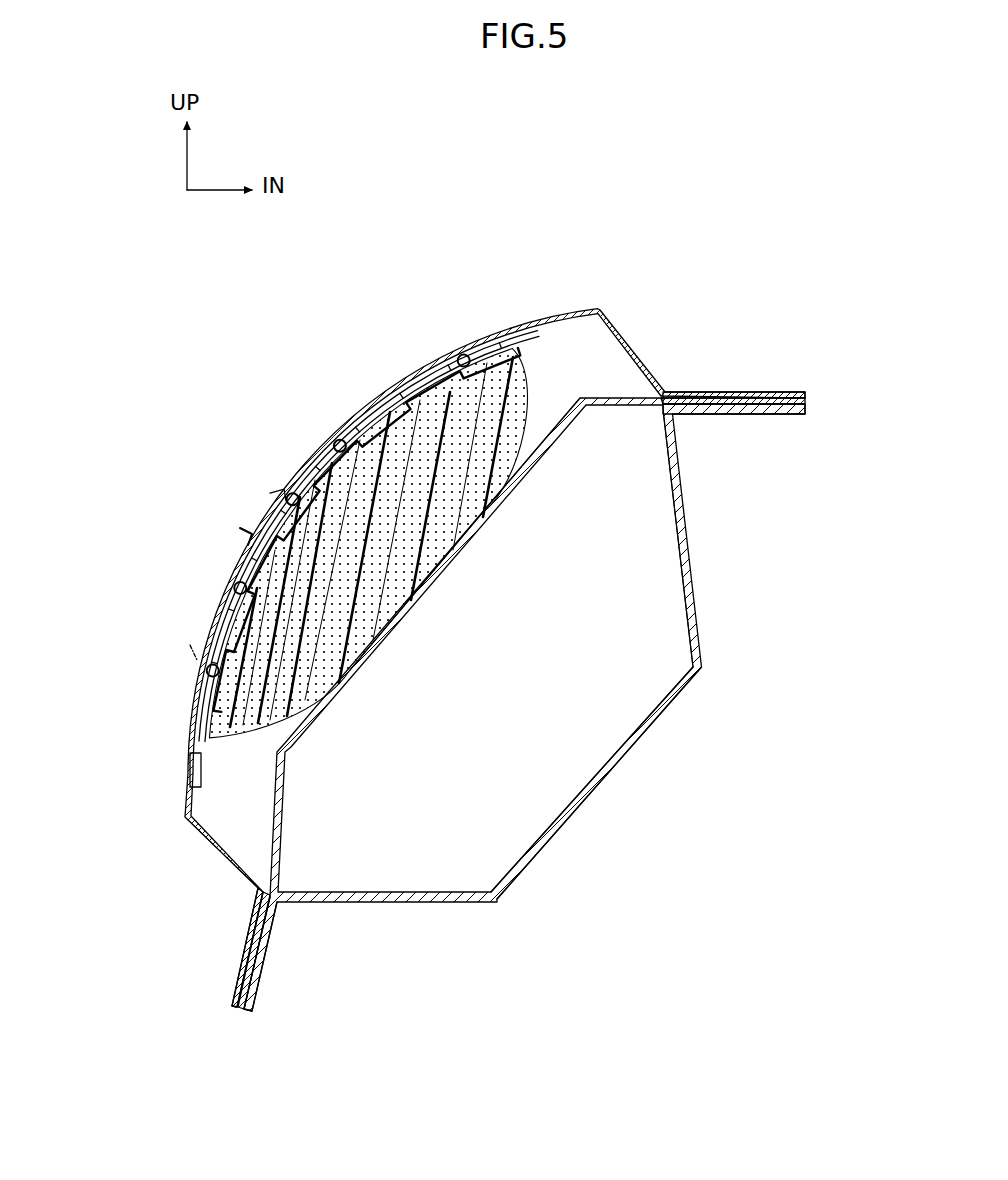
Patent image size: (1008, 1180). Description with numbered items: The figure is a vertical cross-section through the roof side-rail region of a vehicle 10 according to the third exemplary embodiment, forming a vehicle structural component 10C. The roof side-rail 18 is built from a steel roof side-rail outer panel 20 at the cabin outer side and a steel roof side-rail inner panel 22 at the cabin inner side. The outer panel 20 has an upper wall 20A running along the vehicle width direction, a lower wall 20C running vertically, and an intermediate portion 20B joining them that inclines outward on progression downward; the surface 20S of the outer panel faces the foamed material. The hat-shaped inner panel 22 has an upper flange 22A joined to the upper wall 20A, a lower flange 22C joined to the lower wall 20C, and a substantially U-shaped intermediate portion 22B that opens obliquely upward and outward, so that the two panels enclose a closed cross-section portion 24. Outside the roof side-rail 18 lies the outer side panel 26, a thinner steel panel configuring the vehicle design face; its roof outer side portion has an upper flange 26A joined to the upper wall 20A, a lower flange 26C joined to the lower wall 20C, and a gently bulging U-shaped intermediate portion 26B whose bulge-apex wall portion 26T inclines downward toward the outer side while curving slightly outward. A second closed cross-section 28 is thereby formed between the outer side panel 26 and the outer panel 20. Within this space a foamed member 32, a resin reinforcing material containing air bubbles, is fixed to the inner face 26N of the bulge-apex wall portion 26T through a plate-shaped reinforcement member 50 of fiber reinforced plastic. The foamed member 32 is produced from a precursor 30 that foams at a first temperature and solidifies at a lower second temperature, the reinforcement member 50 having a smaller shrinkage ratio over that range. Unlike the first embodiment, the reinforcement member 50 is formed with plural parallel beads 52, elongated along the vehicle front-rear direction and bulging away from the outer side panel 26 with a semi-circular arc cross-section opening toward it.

The vehicle 10 is at (134, 932).
The vehicle structural component 10C is at (149, 808).
The roof side-rail 18 is at (767, 600).
The roof side-rail outer panel 20 is at (347, 702).
The upper wall 20A is at (752, 398).
The intermediate portion 20B is at (427, 605).
The lower wall 20C is at (243, 953).
The surface of airbag 20S is at (372, 637).
The roof side-rail inner panel 22 is at (541, 874).
The upper flange 22A is at (752, 415).
The intermediate portion 22B is at (585, 800).
The lower flange 22C is at (263, 964).
The closed cross-section portion 24 is at (484, 793).
The outer side panel 26 is at (560, 311).
The upper flange 26A is at (704, 392).
The intermediate portion 26B is at (347, 410).
The lower flange 26C is at (252, 915).
The bulge-apex wall portion 26T is at (276, 489).
The inner face 26N is at (247, 530).
The closed cross-section 28 is at (592, 372).
The precursor 30 is at (190, 648).
The foamed member 32 is at (534, 426).
The reinforcement member 50 is at (404, 381).
The beads 52 is at (468, 365).